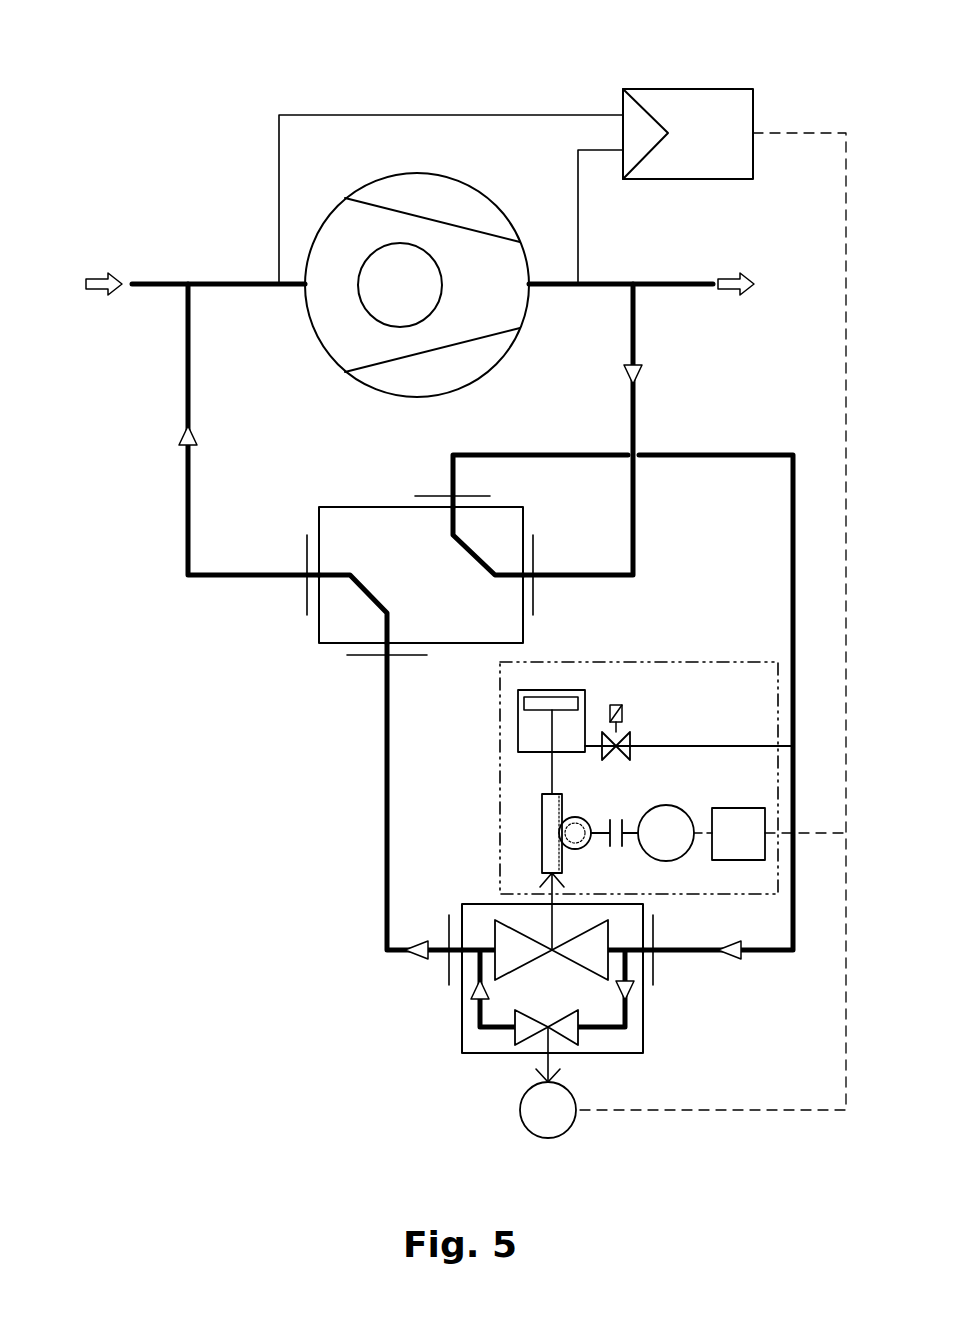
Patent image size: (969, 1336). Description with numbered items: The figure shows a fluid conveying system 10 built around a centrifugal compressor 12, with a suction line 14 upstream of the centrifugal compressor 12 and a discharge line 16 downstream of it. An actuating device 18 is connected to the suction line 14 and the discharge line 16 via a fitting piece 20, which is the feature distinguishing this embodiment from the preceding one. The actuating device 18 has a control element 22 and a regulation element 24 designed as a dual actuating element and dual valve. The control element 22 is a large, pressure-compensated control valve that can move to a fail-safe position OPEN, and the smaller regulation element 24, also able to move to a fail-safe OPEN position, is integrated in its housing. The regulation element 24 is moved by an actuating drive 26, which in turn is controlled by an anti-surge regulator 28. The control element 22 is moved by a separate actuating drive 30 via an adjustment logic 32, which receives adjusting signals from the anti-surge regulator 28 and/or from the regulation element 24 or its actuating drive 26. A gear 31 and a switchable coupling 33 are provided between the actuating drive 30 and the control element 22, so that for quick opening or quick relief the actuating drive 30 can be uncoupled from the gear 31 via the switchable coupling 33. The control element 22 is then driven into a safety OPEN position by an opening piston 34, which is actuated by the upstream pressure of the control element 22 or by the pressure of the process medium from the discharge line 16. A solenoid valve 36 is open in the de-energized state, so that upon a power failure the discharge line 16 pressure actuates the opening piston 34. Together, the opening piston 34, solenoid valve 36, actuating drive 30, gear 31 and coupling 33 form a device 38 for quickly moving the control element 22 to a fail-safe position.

The fluid conveying system 10 is at (150, 172).
The centrifugal compressor 12 is at (337, 327).
The suction line 14 is at (160, 283).
The discharge line 16 is at (615, 283).
The actuating device 18 is at (398, 1025).
The fitting piece 20 is at (292, 653).
The control element 22 is at (535, 920).
The regulation element 24 is at (495, 1042).
The actuating drive 26 is at (530, 1125).
The anti-surge regulator 28 is at (682, 100).
The actuating drive 30 is at (660, 833).
The gear 31 is at (530, 815).
The adjustment logic 32 is at (755, 855).
The switchable coupling 33 is at (620, 812).
The opening piston 34 is at (553, 703).
The solenoid valve 36 is at (648, 725).
The device for quickly moving the control element to a fail-safe position 38 is at (620, 660).